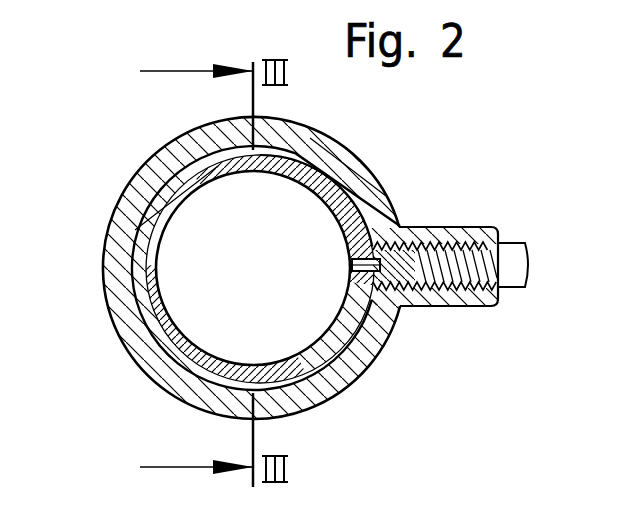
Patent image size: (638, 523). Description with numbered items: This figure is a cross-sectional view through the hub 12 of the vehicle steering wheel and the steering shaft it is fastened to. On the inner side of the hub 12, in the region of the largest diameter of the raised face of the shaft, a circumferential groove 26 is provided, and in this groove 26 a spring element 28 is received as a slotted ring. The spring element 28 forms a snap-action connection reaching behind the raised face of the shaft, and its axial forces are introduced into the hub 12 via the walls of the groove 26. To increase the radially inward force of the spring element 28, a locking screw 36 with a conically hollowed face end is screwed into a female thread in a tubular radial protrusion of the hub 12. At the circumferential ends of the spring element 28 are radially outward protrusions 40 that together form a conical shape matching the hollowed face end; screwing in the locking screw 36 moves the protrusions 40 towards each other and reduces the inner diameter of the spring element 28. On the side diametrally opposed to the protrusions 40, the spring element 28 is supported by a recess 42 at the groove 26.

The hub 12 is at (329, 150).
The circumferential groove 26 is at (167, 364).
The spring element 28 is at (470, 241).
The locking screw 36 is at (476, 297).
The protrusions 40 is at (396, 308).
The recess 42 is at (137, 265).